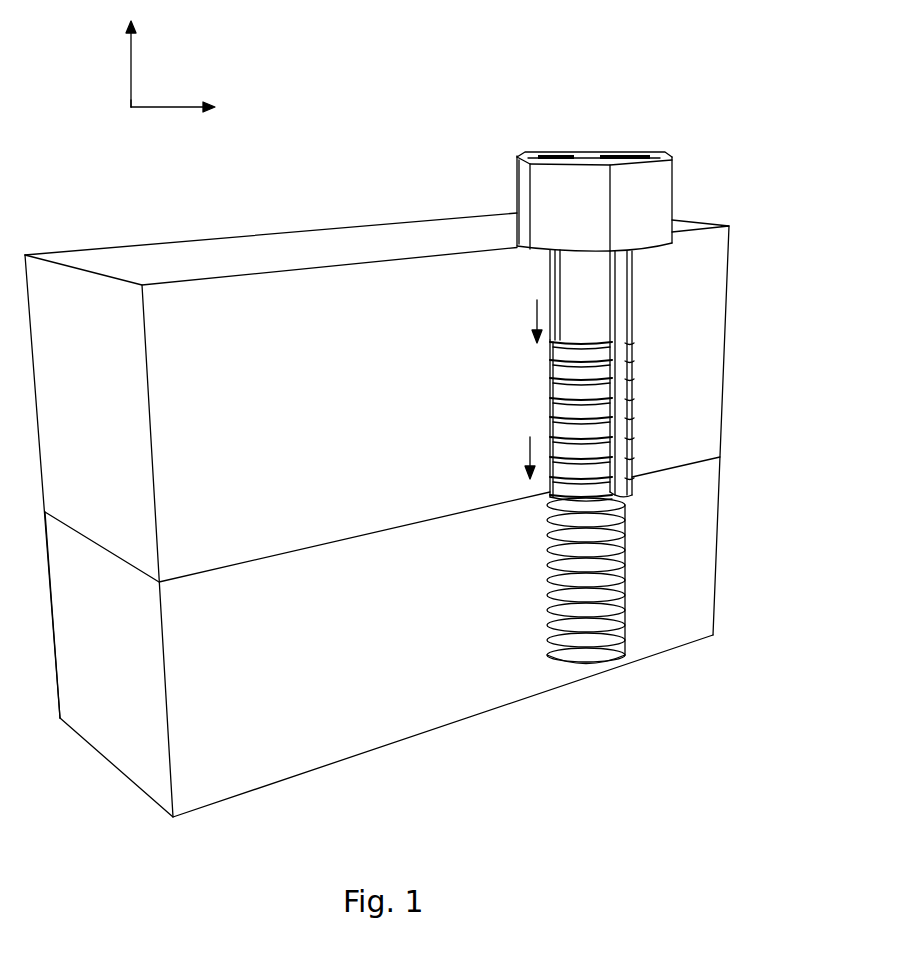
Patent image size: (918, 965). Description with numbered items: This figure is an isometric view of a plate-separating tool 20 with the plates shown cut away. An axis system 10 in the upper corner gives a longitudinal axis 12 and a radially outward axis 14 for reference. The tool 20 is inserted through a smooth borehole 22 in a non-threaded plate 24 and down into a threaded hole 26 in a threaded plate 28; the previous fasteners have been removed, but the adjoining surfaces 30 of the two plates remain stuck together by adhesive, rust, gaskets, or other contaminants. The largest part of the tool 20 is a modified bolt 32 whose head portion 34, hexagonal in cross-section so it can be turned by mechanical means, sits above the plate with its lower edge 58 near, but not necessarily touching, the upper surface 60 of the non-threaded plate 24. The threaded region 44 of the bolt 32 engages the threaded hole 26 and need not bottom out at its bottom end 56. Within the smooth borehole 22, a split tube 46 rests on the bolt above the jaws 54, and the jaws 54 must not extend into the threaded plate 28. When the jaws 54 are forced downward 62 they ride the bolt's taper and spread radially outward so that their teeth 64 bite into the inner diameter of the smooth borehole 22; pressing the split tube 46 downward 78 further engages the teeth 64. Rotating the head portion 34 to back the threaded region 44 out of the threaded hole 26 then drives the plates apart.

The axis system 10 is at (105, 76).
The longitudinal axis 12 is at (134, 54).
The radially outward axis 14 is at (187, 105).
The tool 20 is at (465, 184).
The smooth borehole 22 is at (633, 292).
The non-threaded plate 24 is at (729, 305).
The threaded hole 26 is at (623, 584).
The threaded plate 28 is at (716, 548).
The adjoining surfaces 30 is at (720, 456).
The modified bolt 32 is at (673, 192).
The head portion 34 is at (620, 153).
The threaded region 44 is at (548, 580).
The split tube 46 is at (550, 278).
The jaws 54 is at (550, 400).
The bottom end 56 is at (560, 661).
The lower edge 58 is at (526, 247).
The upper surface 60 is at (297, 243).
The downward direction 62 is at (527, 451).
The teeth 64 is at (550, 370).
The downward direction 78 is at (533, 316).